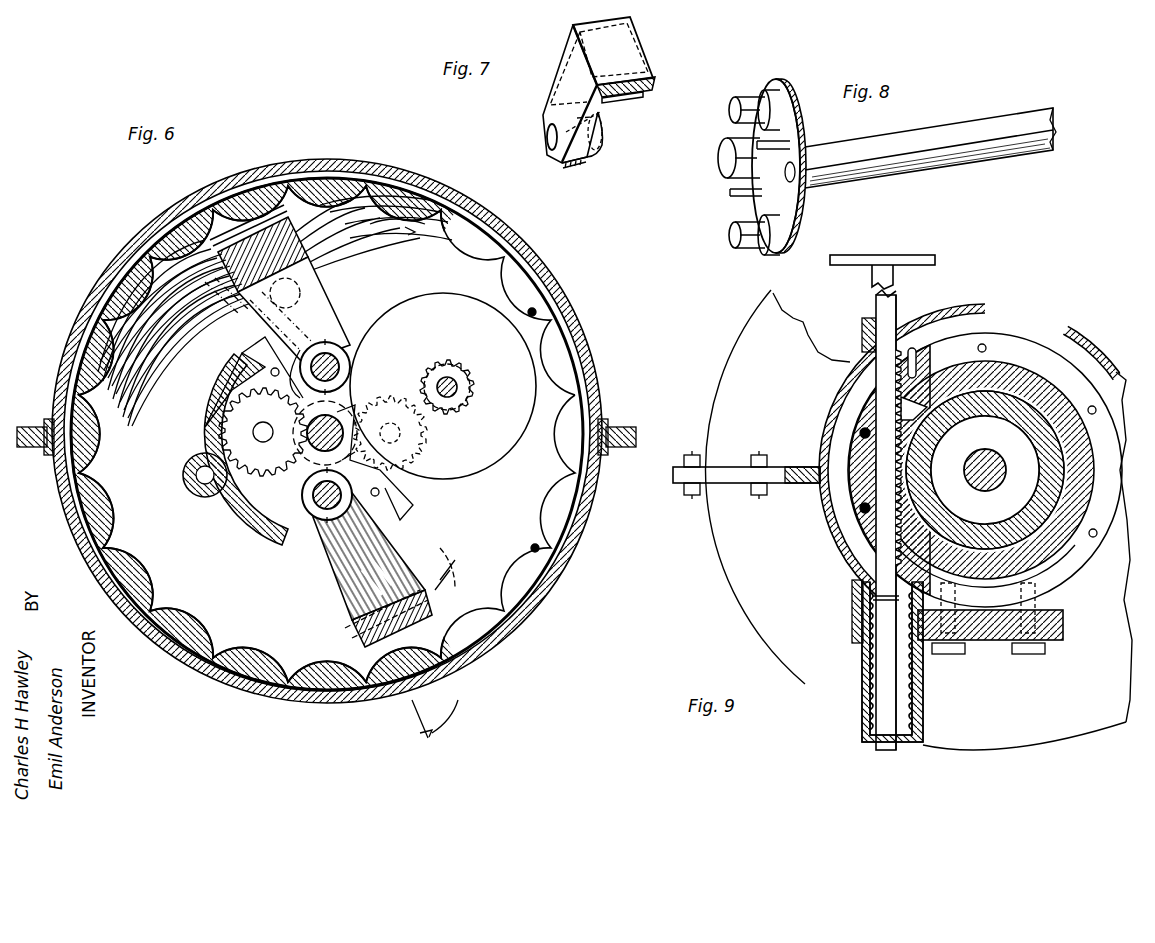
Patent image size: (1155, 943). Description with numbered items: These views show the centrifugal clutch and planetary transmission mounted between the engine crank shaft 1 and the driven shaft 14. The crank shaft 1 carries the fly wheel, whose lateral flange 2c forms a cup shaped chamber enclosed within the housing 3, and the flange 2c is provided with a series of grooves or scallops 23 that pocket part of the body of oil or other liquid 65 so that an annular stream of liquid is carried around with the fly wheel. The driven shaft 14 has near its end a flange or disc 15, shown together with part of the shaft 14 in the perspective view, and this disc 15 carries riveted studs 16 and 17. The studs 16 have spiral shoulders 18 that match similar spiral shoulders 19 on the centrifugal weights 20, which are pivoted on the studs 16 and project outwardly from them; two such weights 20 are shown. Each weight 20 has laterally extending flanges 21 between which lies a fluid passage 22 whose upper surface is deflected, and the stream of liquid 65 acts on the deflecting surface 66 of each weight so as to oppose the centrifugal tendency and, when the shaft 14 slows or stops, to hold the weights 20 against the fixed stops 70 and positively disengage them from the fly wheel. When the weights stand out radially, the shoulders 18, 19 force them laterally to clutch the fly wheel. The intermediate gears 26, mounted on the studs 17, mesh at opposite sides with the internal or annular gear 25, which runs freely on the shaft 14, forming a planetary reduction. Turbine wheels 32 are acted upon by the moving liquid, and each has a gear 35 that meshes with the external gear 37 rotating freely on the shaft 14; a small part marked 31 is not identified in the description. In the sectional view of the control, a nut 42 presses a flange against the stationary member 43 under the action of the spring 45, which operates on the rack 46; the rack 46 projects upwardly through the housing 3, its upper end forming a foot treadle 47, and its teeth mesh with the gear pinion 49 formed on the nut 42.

In FIG. 6, the shaft 1 is at (222, 128).
In FIG. 6, the lateral flange 2c is at (566, 347).
In FIG. 6, the housing 3 is at (586, 548).
In FIG. 8, the driven shaft 14 is at (930, 148).
In FIG. 9, the driven shaft 14 is at (984, 452).
In FIG. 8, the flange or disc 15 is at (812, 222).
In FIG. 6, the studs 16 is at (348, 335).
In FIG. 8, the studs 16 is at (733, 118).
In FIG. 6, the studs 17 is at (253, 435).
In FIG. 8, the studs 17 is at (724, 160).
In FIG. 8, the spiral shoulders 18 is at (766, 94).
In FIG. 7, the spiral shoulders 19 is at (598, 140).
In FIG. 6, the weights 20 is at (322, 303).
In FIG. 7, the weights 20 is at (560, 96).
In FIG. 6, the laterally extending flanges 21 is at (255, 232).
In FIG. 7, the laterally extending flanges 21 is at (640, 125).
In FIG. 6, the fluid passage 22 is at (352, 628).
In FIG. 7, the fluid passage 22 is at (658, 97).
In FIG. 6, the grooves or scallops 23 is at (542, 488).
In FIG. 6, the internal or annular gear 25 is at (270, 505).
In FIG. 6, the intermediate gears 26 is at (412, 462).
In FIG. 6, the pin 31 is at (457, 382).
In FIG. 6, the turbine wheels 32 is at (447, 370).
In FIG. 6, the gear 35 is at (467, 389).
In FIG. 6, the external gear 37 is at (405, 365).
In FIG. 9, the nut 42 is at (1043, 495).
In FIG. 9, the stationary member 43 is at (1042, 367).
In FIG. 9, the spring 45 is at (868, 715).
In FIG. 9, the rack 46 is at (884, 571).
In FIG. 9, the foot treadle 47 is at (920, 257).
In FIG. 9, the gear pinion 49 is at (920, 410).
In FIG. 6, the body of oil or other liquid 65 is at (372, 233).
In FIG. 6, the deflecting surface 66 is at (340, 195).
In FIG. 7, the deflecting surface 66 is at (640, 75).
In FIG. 8, the fixed stops 70 is at (792, 140).